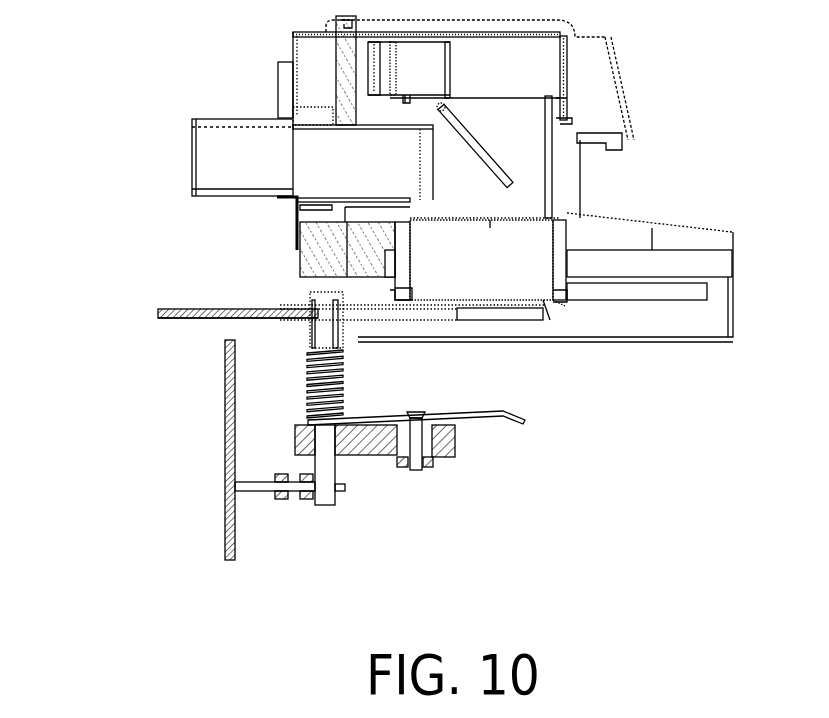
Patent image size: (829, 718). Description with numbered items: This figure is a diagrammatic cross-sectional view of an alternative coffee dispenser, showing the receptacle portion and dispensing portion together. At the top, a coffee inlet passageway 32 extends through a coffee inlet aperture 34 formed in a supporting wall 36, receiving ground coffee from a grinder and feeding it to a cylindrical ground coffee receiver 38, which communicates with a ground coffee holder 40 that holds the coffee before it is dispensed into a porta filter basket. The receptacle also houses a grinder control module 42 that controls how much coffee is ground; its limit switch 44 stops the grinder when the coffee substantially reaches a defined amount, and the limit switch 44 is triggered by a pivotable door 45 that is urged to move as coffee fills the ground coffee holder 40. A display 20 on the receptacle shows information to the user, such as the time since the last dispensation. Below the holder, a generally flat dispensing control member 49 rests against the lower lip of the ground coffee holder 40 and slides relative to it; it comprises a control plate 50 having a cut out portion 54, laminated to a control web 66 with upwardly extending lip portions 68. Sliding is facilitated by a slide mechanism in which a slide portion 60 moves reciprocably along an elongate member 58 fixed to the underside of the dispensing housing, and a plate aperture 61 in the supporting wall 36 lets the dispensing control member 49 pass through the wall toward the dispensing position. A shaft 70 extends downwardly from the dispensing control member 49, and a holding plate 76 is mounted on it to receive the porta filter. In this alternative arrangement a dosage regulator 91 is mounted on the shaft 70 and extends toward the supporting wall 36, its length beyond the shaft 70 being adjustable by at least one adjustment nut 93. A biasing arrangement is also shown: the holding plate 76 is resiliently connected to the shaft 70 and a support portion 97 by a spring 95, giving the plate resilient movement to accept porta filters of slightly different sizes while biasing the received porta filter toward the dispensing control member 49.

The display 20 is at (616, 101).
The coffee inlet passageway 32 is at (205, 110).
The coffee inlet aperture 34 is at (280, 198).
The supporting wall 36 is at (280, 73).
The ground coffee receiver 38 is at (553, 172).
The ground coffee holder 40 is at (565, 263).
The grinder control module 42 is at (568, 58).
The limit switch 44 is at (442, 107).
The pivotable door 45 is at (472, 136).
The dispensing control member 49 is at (150, 316).
The control plate 50 is at (177, 322).
The cut out portion 54 is at (512, 313).
The elongate member 58 is at (690, 295).
The slide portion 60 is at (437, 307).
The plate aperture 61 is at (282, 288).
The control web 66 is at (173, 310).
The lip portions 68 is at (560, 305).
The shaft 70 is at (328, 502).
The holding plate 76 is at (484, 418).
The dosage regulator 91 is at (250, 485).
The adjustment nut 93 is at (302, 475).
The spring 95 is at (340, 360).
The support portion 97 is at (443, 452).